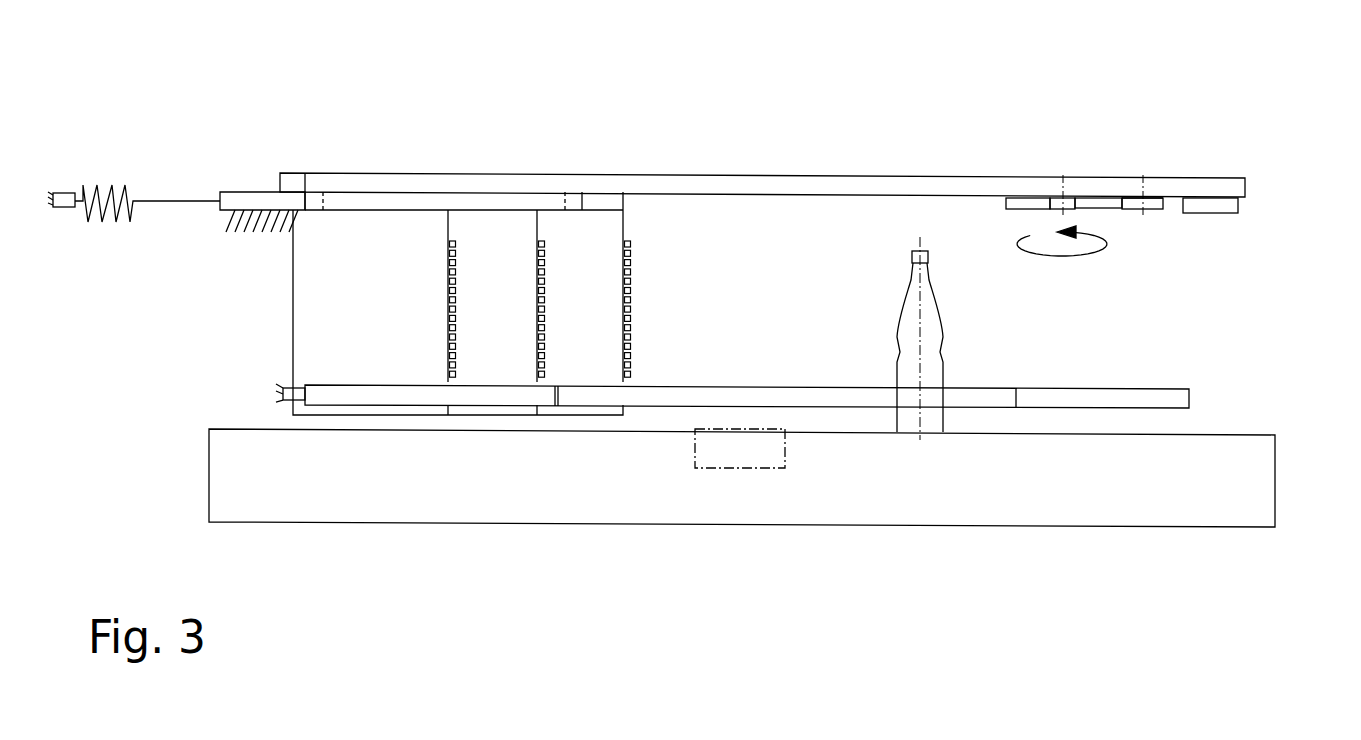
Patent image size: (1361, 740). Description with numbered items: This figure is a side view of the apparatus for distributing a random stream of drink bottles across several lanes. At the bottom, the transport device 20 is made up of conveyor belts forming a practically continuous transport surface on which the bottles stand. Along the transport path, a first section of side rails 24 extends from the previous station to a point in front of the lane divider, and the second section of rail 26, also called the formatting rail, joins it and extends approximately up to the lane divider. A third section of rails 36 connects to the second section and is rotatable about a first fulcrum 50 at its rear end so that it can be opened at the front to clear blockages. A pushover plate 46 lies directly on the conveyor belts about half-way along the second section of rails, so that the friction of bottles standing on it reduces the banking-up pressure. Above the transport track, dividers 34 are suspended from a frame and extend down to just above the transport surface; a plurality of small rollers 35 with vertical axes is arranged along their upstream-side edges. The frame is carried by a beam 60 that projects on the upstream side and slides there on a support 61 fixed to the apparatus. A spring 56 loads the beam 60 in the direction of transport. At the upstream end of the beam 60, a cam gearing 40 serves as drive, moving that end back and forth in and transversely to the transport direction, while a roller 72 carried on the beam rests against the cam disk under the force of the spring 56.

The transport device 20 is at (1187, 467).
The first section of side rails 24 is at (1099, 395).
The second section of rail 26 is at (655, 393).
The dividers 34 is at (575, 292).
The rollers 35 is at (623, 232).
The third section of rails 36 is at (394, 392).
The cam gearing 40 is at (1033, 203).
The pushover plate 46 is at (742, 443).
The first fulcrum 50 is at (283, 391).
The spring 56 is at (98, 187).
The beam 60 is at (1185, 188).
The support 61 is at (1222, 208).
The roller 72 is at (1154, 206).